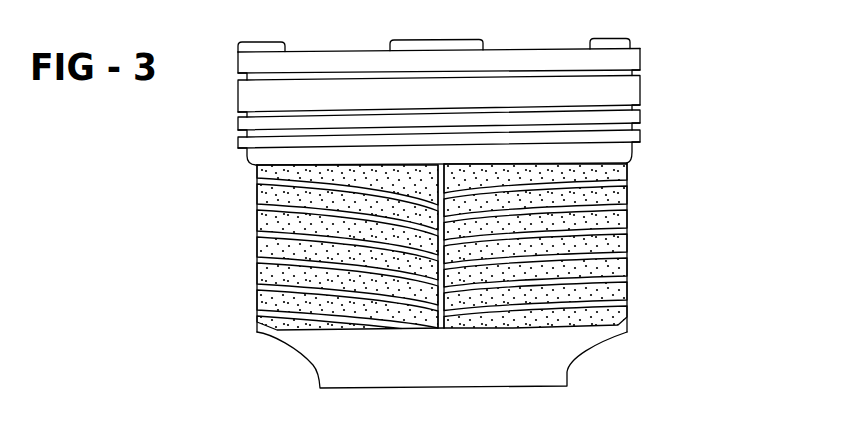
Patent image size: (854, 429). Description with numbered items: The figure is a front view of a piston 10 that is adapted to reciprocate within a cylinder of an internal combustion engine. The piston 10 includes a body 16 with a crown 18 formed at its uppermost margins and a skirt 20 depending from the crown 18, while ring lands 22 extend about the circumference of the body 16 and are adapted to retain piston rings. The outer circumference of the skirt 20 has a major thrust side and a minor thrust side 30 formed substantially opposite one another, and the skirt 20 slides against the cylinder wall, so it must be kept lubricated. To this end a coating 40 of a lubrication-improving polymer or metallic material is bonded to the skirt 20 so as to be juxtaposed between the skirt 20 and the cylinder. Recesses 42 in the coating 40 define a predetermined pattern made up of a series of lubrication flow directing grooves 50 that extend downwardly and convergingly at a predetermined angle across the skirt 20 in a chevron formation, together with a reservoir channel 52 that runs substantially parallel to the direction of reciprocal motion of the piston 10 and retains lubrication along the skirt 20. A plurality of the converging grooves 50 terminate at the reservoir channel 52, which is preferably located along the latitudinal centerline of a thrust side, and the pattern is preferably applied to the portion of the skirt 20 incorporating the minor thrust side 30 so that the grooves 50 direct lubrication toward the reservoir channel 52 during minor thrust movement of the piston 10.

The piston 10 is at (189, 191).
The body 16 is at (690, 155).
The crown 18 is at (678, 51).
The skirt 20 is at (650, 200).
The ring lands 22 is at (640, 128).
The minor thrust side 30 is at (341, 343).
The coating 40 is at (628, 240).
The recesses 42 is at (628, 294).
The lubrication flow directing grooves 50 is at (257, 206).
The reservoir channel 52 is at (443, 288).